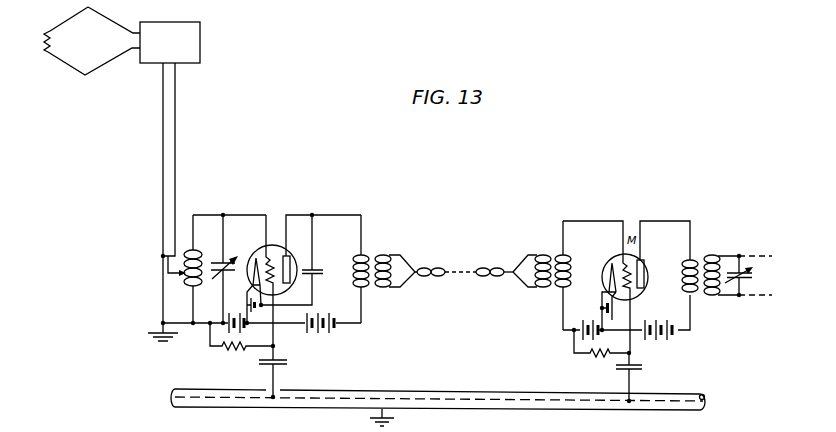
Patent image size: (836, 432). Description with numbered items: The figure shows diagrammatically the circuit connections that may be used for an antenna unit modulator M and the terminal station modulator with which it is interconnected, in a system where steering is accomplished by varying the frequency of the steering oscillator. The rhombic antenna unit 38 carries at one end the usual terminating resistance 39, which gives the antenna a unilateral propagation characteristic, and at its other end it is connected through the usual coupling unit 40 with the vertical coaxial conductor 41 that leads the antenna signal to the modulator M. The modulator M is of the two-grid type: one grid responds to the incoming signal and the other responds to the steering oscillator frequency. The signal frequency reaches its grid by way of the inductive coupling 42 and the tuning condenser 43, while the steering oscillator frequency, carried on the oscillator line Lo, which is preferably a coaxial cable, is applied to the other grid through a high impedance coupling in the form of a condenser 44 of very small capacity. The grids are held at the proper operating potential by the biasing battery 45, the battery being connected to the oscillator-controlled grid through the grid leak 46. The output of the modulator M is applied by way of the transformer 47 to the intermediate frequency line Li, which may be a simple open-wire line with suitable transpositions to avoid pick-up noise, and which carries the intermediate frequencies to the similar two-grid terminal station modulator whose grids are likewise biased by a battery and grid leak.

The rhombic antenna unit 38 is at (103, 16).
The terminating resistance 39 is at (42, 33).
The coupling unit 40 is at (200, 40).
The vertical coaxial conductor 41 is at (176, 124).
The inductive coupling 42 is at (197, 252).
The tuning condenser 43 is at (236, 258).
The condenser 44 is at (280, 365).
The biasing battery 45 is at (231, 313).
The grid leak 46 is at (235, 356).
The transformer 47 is at (372, 252).
The intermediate frequency line Li is at (445, 266).
The oscillator line Lo is at (425, 391).
The antenna unit modulator M is at (304, 279).